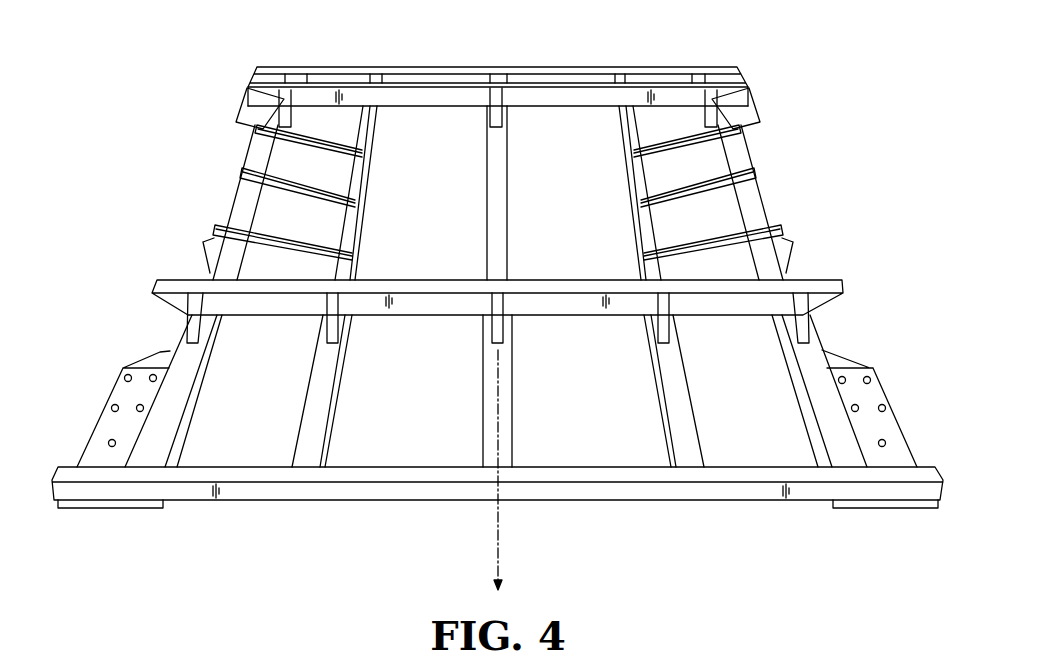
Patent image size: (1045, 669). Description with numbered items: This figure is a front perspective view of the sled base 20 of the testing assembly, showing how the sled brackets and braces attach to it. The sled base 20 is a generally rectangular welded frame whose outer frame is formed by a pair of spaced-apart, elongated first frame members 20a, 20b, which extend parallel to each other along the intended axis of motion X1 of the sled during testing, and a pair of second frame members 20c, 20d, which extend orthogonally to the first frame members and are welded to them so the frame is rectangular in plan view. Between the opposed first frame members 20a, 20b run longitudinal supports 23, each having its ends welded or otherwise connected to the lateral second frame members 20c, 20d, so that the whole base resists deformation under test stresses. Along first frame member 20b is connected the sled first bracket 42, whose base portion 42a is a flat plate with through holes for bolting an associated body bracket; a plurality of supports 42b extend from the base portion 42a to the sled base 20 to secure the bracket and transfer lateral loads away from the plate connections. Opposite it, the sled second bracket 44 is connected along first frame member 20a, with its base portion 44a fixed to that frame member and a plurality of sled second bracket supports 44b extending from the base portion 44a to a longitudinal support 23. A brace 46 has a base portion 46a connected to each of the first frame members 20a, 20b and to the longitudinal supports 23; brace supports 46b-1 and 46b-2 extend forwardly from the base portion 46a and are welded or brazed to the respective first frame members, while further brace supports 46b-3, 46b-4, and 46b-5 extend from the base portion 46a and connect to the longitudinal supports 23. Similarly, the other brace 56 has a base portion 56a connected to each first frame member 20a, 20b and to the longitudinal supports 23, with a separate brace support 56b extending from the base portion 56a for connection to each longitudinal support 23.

The sled base 20 is at (497, 301).
The first frame member 20a is at (178, 376).
The first frame member 20b is at (740, 72).
The second frame member 20c is at (268, 489).
The second frame member 20d is at (428, 67).
The longitudinal support 23 is at (677, 437).
The sled first bracket 42 is at (751, 149).
The base portion 42a is at (760, 148).
The support 42b is at (687, 132).
The sled second bracket 44 is at (269, 149).
The sled second bracket base portion 44a is at (236, 152).
The sled second bracket support 44b is at (330, 138).
The brace 46 is at (481, 260).
The base portion 46a is at (408, 295).
The brace support 46b-1 is at (200, 307).
The brace support 46b-2 is at (800, 307).
The brace support 46b-3 is at (340, 307).
The brace support 46b-4 is at (660, 307).
The brace support 46b-5 is at (492, 307).
The other brace 56 is at (537, 73).
The base portion 56a is at (445, 97).
The brace support 56b is at (283, 97).
The axis of motion X1 is at (511, 470).